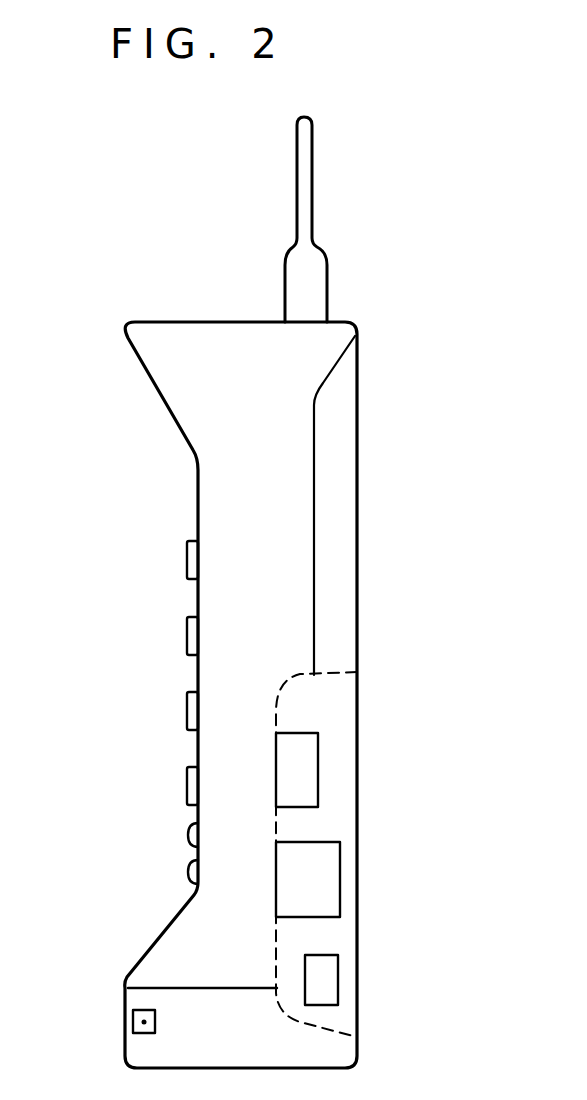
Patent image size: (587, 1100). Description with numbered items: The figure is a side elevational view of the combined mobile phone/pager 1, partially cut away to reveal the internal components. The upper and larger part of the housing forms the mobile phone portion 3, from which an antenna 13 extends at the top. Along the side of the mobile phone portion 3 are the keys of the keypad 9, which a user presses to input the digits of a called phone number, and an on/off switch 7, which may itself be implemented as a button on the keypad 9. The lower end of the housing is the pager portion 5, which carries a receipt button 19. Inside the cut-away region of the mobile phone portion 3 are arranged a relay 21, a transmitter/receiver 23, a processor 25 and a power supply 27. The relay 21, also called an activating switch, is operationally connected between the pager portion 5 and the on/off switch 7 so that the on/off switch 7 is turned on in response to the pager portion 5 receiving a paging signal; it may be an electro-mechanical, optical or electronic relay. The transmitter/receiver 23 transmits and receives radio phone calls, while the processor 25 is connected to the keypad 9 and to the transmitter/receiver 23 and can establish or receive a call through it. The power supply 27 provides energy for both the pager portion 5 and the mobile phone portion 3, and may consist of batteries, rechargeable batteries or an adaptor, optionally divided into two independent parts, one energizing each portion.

The combined mobile phone/pager 1 is at (428, 396).
The mobile phone portion 3 is at (368, 579).
The pager portion 5 is at (116, 1053).
The on/off switch 7 is at (190, 875).
The keypad 9 is at (141, 528).
The antenna 13 is at (305, 178).
The receipt button 19 is at (132, 1022).
The relay 21 is at (328, 978).
The transmitter/receiver 23 is at (305, 770).
The processor 25 is at (323, 877).
The power supply 27 is at (325, 503).